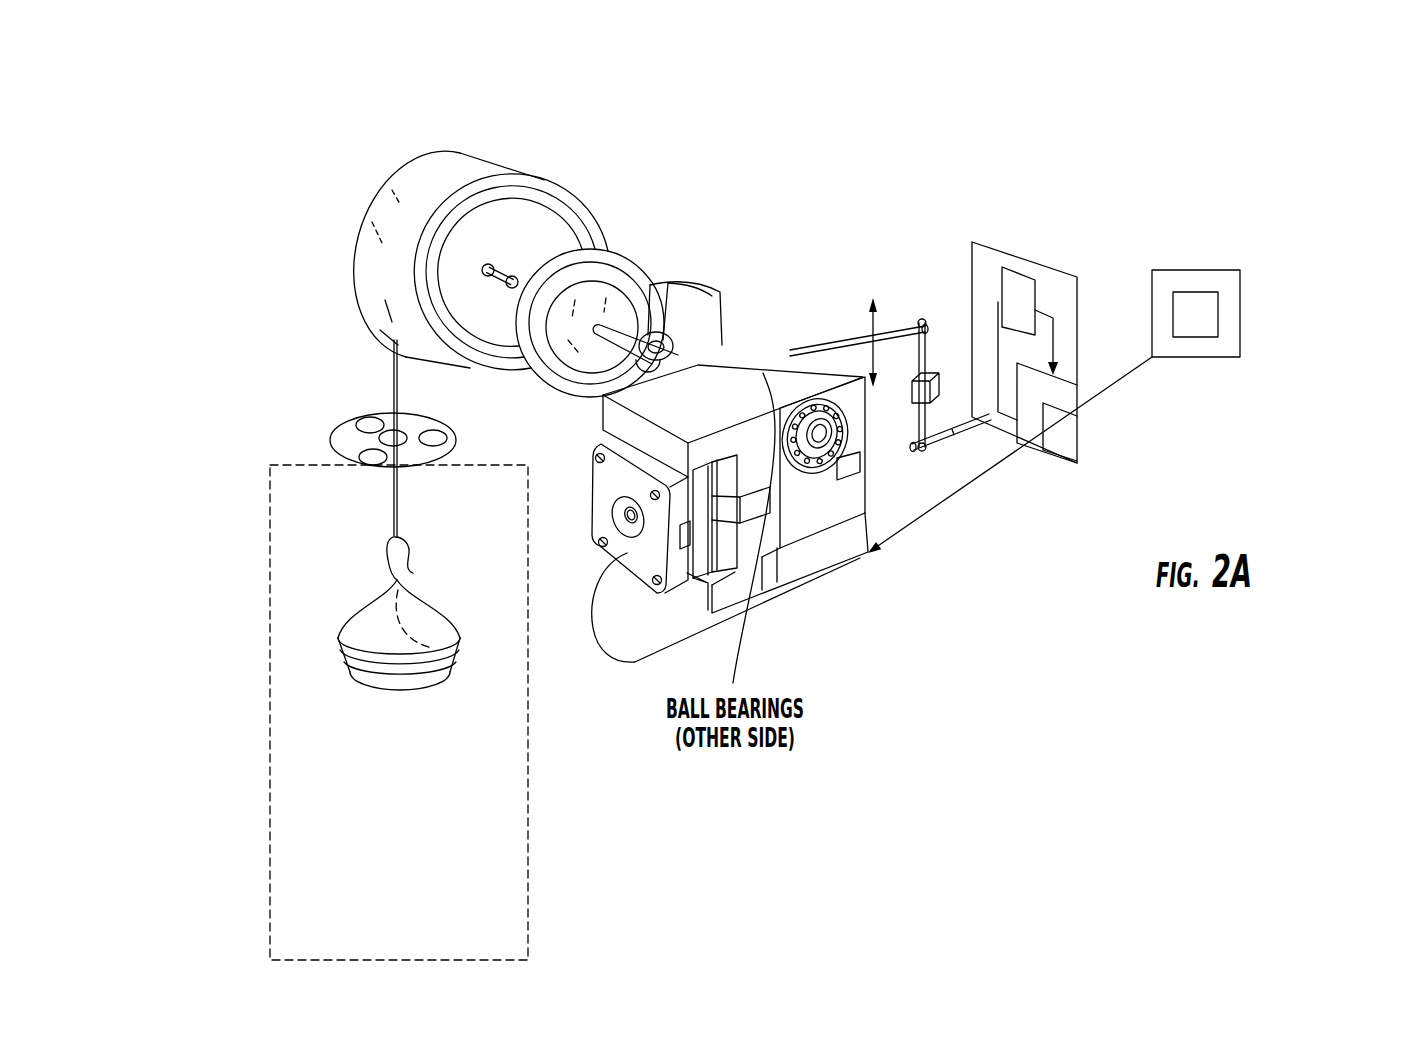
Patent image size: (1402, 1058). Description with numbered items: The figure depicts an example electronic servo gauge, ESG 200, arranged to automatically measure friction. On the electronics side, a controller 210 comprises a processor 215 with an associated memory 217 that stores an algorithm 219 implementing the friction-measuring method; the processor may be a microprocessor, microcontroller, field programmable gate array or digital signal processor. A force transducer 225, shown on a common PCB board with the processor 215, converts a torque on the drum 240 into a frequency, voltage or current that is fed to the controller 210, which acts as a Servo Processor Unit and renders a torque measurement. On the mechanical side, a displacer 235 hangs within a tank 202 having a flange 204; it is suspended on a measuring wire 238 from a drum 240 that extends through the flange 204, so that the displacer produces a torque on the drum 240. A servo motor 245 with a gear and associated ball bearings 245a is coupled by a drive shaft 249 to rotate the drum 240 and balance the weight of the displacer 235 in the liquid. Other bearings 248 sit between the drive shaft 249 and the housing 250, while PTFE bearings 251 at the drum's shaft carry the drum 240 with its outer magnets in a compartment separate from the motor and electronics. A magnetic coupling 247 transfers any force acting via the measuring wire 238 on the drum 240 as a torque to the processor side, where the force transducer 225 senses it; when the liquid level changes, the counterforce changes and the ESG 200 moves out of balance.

The ESG 200 is at (814, 197).
The tank 202 is at (268, 600).
The flange 204 is at (332, 460).
The controller 210 is at (1067, 400).
The processor 215 is at (1058, 440).
The memory 217 is at (1245, 357).
The algorithm 219 is at (1218, 310).
The force transducer 225 is at (1027, 293).
The displacer 235 is at (430, 667).
The measuring wire 238 is at (395, 403).
The drum 240 is at (440, 177).
The servo motor 245 is at (593, 502).
The ball bearings 245a is at (836, 418).
The magnetic coupling 247 is at (586, 247).
The bearings 248 is at (676, 336).
The drive shaft 249 is at (612, 292).
The housing 250 is at (717, 314).
The bearings 251 is at (488, 264).